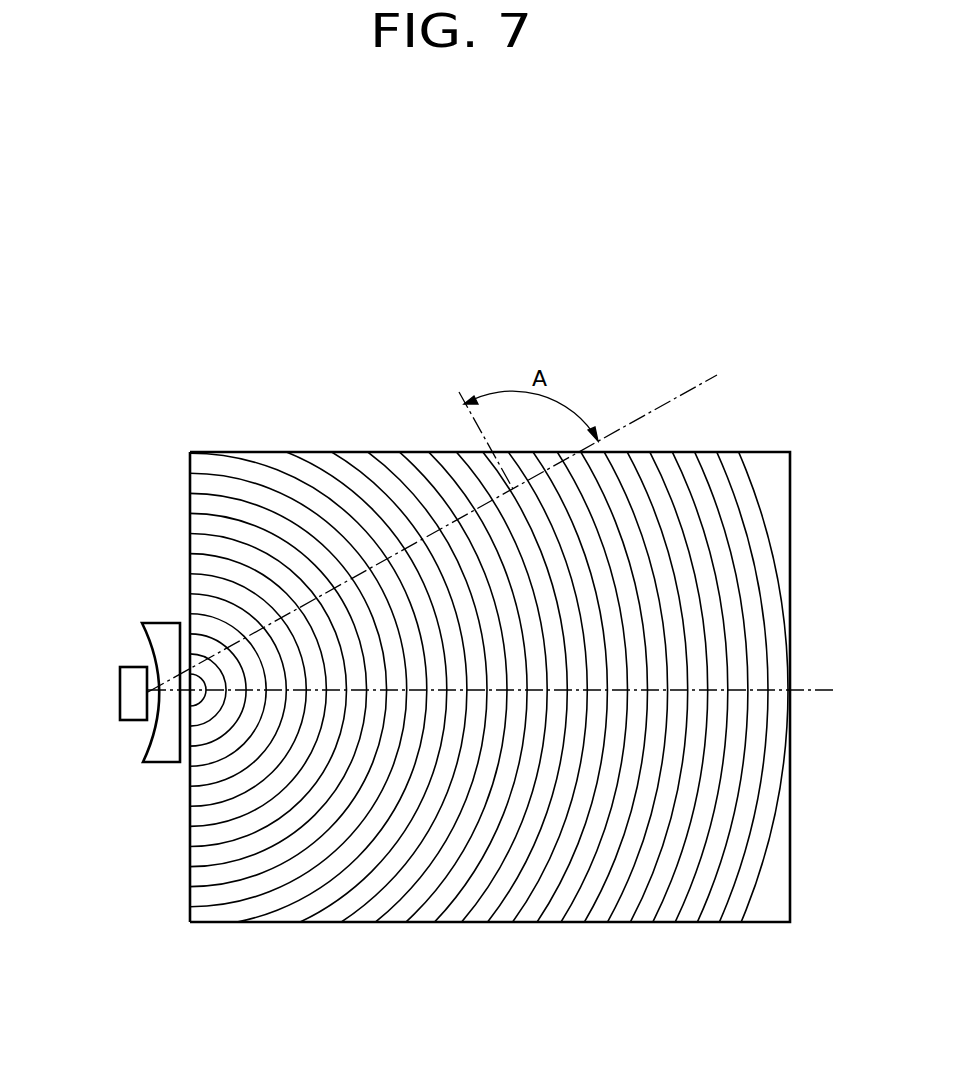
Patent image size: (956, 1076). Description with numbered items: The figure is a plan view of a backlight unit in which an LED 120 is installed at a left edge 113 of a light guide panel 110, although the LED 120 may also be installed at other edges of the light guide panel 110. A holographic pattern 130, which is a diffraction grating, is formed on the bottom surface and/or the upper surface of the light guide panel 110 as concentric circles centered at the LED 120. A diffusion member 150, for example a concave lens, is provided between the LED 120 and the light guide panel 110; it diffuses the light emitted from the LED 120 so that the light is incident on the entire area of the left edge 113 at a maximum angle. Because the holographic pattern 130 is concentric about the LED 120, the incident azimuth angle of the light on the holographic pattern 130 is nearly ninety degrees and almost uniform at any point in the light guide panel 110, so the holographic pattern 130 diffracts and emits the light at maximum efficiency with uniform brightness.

The light guide panel 110 is at (748, 451).
The left edge 113 is at (190, 551).
The LED 120 is at (120, 710).
The holographic pattern 130 is at (745, 594).
The diffusion member 150 is at (157, 762).